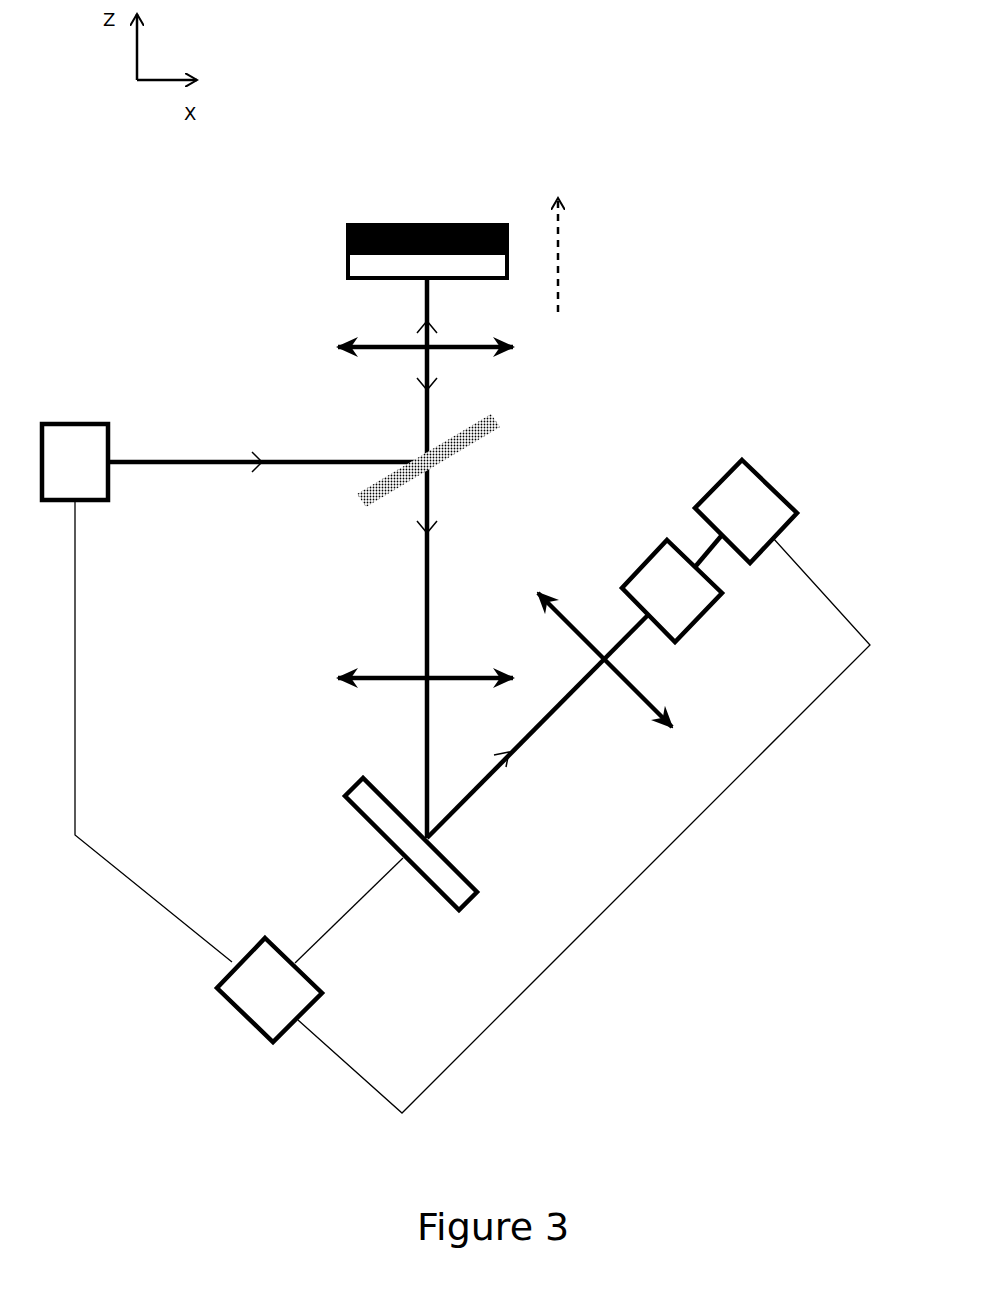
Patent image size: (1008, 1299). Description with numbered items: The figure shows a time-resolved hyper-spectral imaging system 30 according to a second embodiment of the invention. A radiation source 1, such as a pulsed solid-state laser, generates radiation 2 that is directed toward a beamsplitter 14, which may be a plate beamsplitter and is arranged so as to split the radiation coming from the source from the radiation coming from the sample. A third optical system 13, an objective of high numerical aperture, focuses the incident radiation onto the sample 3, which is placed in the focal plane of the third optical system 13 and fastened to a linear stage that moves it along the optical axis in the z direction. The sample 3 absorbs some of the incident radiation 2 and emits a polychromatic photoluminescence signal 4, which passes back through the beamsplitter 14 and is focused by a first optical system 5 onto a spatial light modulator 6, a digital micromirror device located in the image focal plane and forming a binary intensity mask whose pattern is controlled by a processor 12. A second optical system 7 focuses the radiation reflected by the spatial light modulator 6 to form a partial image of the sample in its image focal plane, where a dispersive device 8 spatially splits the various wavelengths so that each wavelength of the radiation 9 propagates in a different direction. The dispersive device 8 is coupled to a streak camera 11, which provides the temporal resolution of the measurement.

The radiation source 1 is at (75, 422).
The radiation 2 is at (152, 462).
The sample 3 is at (348, 266).
The photoluminescence signal 4 is at (427, 410).
The first optical system 5 is at (335, 685).
The spatial light modulator 6 is at (365, 830).
The second optical system 7 is at (592, 640).
The dispersive device 8 is at (635, 565).
The radiation 9 is at (708, 553).
The streak camera 11 is at (770, 480).
The processor 12 is at (245, 1020).
The third optical system 13 is at (425, 225).
The beamsplitter 14 is at (497, 421).
The imaging system 30 is at (197, 1112).